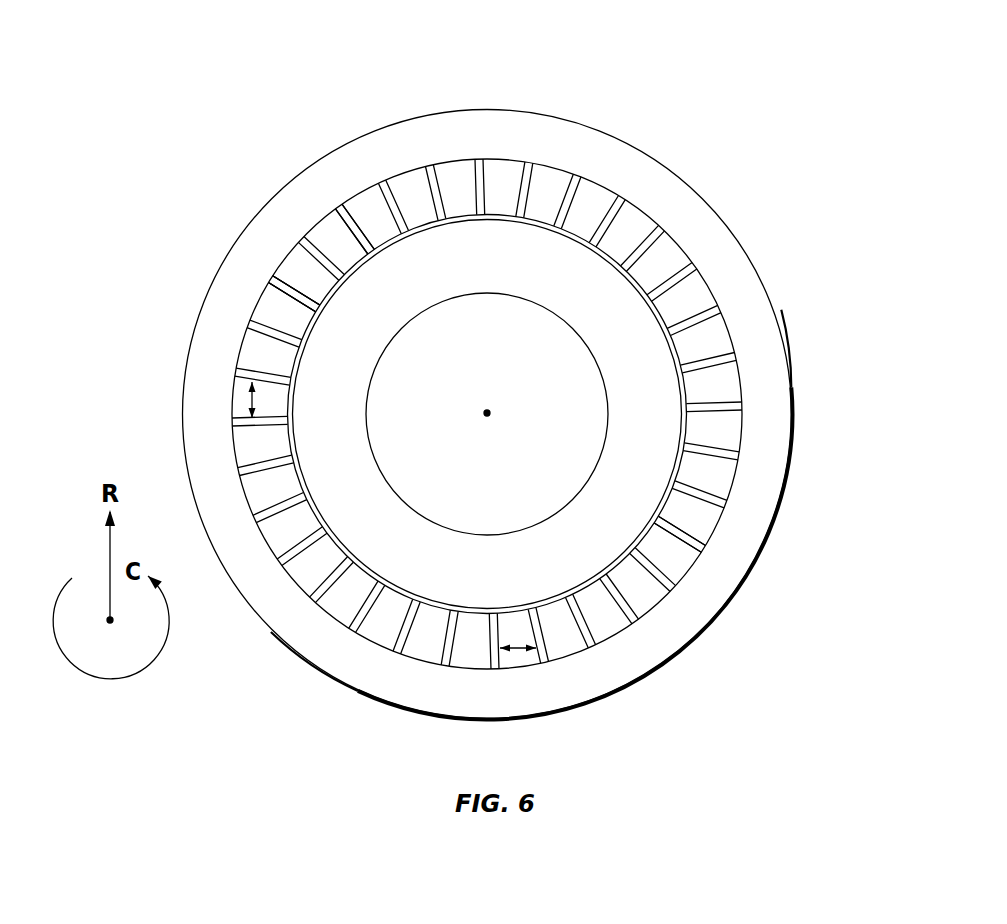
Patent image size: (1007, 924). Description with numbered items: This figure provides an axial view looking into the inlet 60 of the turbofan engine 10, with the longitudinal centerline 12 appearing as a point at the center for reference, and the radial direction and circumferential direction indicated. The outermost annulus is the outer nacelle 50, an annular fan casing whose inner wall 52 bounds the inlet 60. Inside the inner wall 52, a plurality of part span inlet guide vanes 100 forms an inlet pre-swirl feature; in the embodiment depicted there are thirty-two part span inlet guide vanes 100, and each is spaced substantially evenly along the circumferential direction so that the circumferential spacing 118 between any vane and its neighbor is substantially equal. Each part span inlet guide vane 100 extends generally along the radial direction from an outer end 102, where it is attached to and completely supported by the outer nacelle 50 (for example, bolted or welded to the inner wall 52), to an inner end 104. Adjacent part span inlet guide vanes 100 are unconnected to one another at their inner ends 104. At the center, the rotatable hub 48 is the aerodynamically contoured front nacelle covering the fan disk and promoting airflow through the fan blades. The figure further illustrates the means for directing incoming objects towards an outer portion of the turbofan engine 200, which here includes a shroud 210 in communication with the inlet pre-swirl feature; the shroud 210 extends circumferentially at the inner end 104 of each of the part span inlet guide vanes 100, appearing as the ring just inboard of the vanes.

The turbofan engine 10 is at (760, 105).
The longitudinal centerline 12 is at (488, 410).
The hub 48 is at (607, 398).
The outer nacelle 50 is at (410, 130).
The inner wall 52 is at (505, 164).
The inlet 60 is at (662, 256).
The part span inlet guide vane 100 is at (280, 288).
The outer end 102 is at (266, 275).
The inner end 104 is at (320, 315).
The circumferential spacing 118 is at (255, 400).
The means for directing incoming objects towards an outer portion of the turbofan en 200 is at (487, 414).
The shroud 210 is at (452, 224).